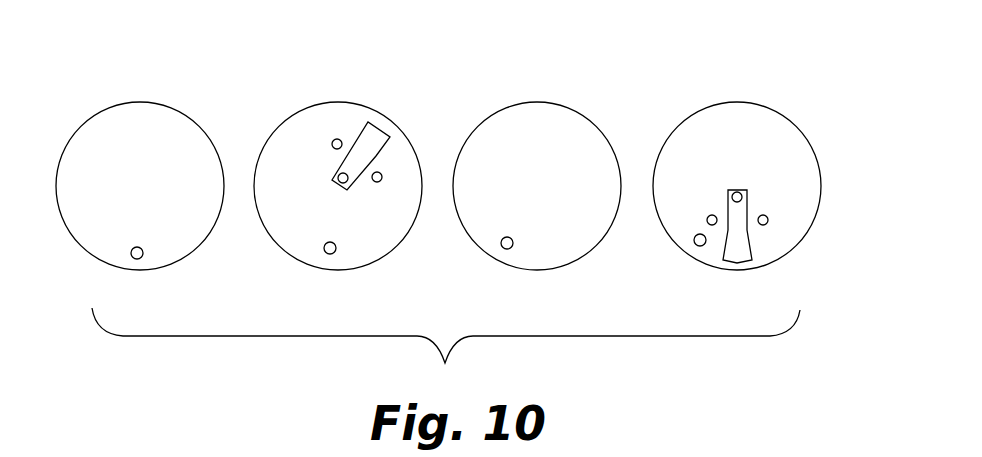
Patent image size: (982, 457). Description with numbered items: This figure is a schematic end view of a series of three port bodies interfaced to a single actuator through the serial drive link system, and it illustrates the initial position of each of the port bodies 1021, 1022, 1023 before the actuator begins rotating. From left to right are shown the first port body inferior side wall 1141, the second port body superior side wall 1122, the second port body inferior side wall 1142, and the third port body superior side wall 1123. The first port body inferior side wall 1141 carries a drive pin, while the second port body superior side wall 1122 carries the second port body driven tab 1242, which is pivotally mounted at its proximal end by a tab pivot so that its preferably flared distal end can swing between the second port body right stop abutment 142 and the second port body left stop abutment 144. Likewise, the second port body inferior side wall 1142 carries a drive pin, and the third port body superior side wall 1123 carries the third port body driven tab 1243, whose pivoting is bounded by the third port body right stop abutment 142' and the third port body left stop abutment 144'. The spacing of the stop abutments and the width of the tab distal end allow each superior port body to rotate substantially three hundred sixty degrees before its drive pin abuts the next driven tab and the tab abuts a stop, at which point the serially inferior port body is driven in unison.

The first port body 1021 is at (197, 102).
The second port body 1022 is at (464, 119).
The third port body 1023 is at (773, 102).
The first port body inferior side wall 1141 is at (148, 167).
The second port body superior side wall 1122 is at (322, 214).
The second port body inferior side wall 1142 is at (527, 192).
The third port body superior side wall 1123 is at (790, 164).
The second port body right stop abutment 142 is at (295, 118).
The second port body left stop abutment 144 is at (404, 216).
The second port body driven tab 1242 is at (360, 138).
The third port body driven tab 1243 is at (750, 240).
The third port body left stop abutment 144' is at (681, 247).
The third port body right stop abutment 142' is at (795, 247).